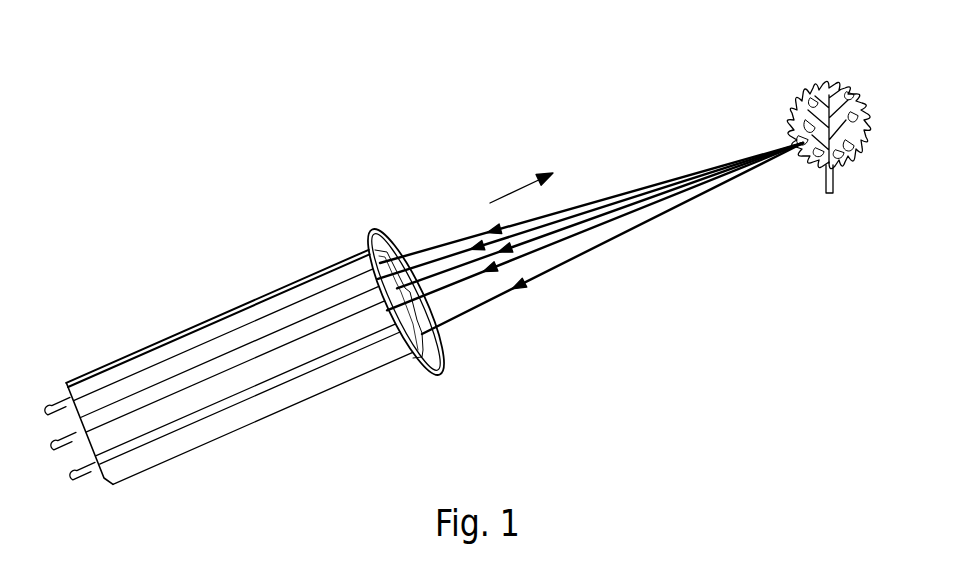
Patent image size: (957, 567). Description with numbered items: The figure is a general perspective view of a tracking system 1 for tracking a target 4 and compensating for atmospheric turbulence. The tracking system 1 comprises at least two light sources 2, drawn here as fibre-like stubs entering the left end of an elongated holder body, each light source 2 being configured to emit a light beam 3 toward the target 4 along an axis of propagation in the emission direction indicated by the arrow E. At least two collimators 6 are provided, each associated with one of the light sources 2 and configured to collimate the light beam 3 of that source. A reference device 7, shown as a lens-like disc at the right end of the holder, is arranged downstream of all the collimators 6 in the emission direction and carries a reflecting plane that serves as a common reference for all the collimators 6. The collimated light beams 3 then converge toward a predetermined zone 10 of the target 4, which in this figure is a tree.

The tracking system 1 is at (240, 331).
The light source 2 is at (53, 399).
The light beam 3 is at (608, 197).
The target 4 is at (828, 92).
The collimator 6 is at (143, 349).
The reference device 7 is at (377, 228).
The predetermined zone 10 is at (830, 142).